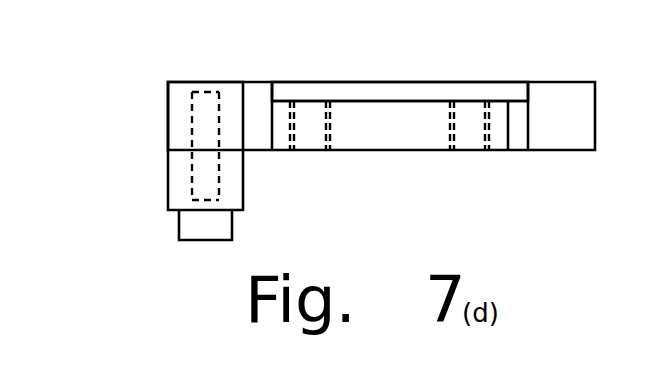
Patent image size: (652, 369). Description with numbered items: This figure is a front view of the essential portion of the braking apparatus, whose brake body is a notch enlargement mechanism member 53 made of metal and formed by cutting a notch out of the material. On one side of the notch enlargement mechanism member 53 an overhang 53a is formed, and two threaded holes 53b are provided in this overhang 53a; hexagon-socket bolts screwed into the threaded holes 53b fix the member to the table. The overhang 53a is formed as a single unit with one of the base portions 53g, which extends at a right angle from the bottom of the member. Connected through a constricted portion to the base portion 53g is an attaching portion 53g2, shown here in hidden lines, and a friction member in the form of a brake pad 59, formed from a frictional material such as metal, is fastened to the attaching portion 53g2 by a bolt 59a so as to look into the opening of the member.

The notch enlargement mechanism member 53 is at (433, 153).
The overhang 53a is at (378, 137).
The threaded holes 53b is at (325, 134).
The base portion 53g is at (450, 92).
The attaching portion 53g2 is at (178, 110).
The brake pad 59 is at (178, 188).
The bolt 59a is at (190, 232).